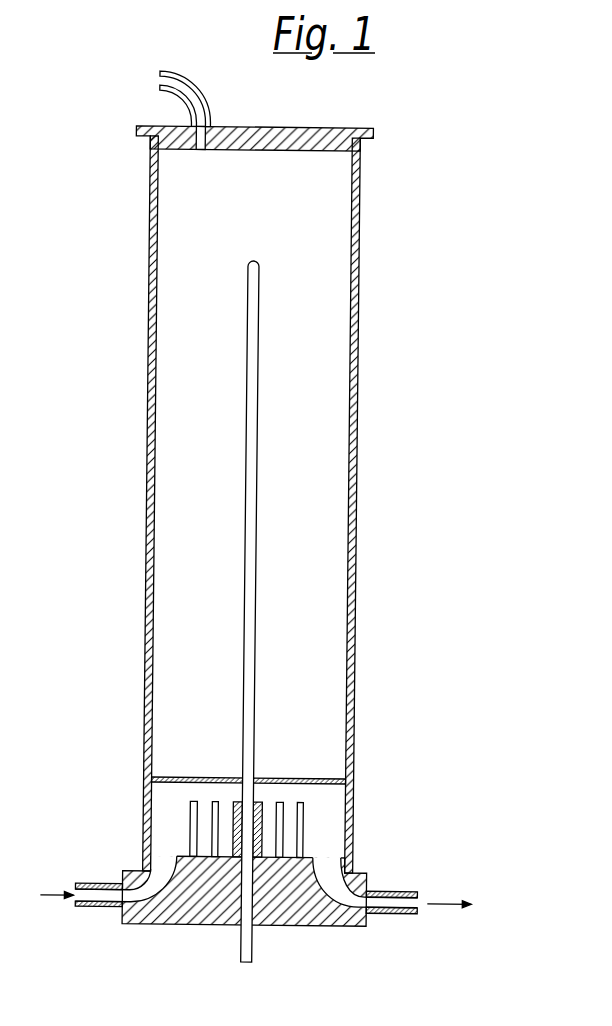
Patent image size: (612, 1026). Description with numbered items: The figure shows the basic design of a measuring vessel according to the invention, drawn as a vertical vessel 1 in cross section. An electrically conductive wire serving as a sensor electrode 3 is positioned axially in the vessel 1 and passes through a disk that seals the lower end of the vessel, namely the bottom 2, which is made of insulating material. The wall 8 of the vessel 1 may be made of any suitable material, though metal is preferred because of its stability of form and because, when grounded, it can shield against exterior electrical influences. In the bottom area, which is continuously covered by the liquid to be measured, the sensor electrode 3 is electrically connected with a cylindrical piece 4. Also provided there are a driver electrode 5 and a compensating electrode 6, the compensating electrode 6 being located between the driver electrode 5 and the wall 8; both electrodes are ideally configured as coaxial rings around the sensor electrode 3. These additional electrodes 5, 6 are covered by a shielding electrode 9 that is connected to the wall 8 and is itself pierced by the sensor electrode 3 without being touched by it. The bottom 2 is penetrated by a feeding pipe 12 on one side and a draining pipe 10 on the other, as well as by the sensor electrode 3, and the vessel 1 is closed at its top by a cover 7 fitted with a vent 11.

The vessel 1 is at (358, 618).
The bottom 2 is at (181, 909).
The sensor electrode 3 is at (247, 932).
The cylindrical piece 4 is at (261, 807).
The driver electrode 5 is at (285, 806).
The compensating electrode 6 is at (305, 804).
The cover 7 is at (248, 127).
The wall 8 is at (354, 721).
The shielding electrode 9 is at (210, 778).
The draining pipe 10 is at (401, 888).
The vent 11 is at (178, 94).
The feeding pipe 12 is at (96, 886).